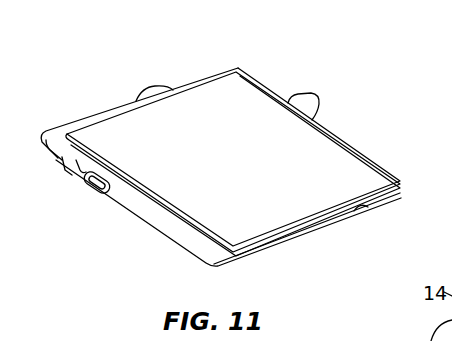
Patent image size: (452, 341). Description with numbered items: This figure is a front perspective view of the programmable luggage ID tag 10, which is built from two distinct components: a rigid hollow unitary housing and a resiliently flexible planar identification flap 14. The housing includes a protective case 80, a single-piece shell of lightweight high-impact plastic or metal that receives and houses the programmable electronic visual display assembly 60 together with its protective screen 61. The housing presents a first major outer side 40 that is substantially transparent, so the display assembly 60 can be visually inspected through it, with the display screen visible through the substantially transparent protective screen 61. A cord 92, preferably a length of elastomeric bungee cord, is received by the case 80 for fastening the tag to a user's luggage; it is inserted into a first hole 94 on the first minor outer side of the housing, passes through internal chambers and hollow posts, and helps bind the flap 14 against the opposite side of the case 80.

The programmable luggage ID tag 10 is at (295, 56).
The identification flap 14 is at (121, 104).
The first major outer side 40 is at (327, 146).
The protective screen 61 is at (231, 166).
The cord 92 is at (318, 97).
The protective case 80 is at (163, 223).
The first hole 94 is at (98, 184).
The display assembly 60 is at (359, 207).